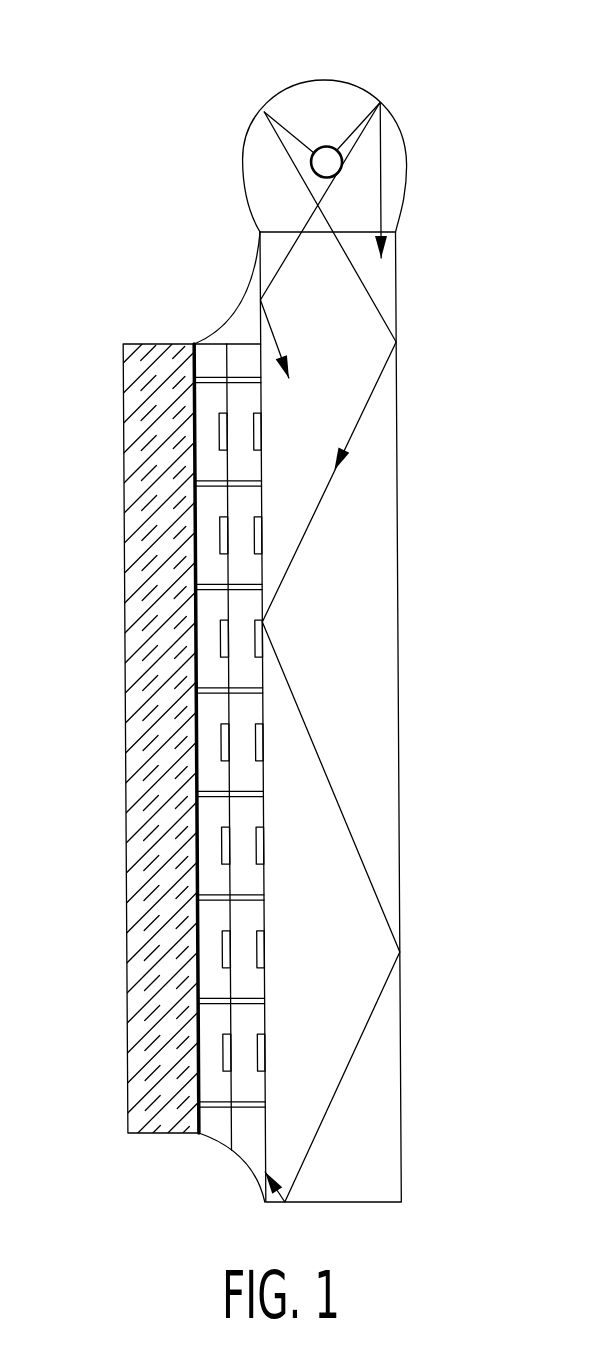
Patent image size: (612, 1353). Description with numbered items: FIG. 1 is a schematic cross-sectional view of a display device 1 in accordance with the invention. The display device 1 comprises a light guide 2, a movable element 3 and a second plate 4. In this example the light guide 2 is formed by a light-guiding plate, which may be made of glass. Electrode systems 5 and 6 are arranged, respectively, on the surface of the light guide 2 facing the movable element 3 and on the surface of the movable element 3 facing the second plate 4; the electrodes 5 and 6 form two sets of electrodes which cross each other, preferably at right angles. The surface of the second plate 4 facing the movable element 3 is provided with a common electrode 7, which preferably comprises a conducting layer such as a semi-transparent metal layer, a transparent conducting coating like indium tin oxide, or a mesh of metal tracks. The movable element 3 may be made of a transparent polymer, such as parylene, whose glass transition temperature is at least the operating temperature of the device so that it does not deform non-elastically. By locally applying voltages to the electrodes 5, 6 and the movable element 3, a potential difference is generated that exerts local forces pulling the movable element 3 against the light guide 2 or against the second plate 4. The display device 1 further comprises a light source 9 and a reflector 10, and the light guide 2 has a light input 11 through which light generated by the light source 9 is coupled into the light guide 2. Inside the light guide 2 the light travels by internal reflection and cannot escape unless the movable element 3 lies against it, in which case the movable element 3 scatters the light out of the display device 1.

The display device 1 is at (405, 982).
The light guide 2 is at (365, 667).
The movable element 3 is at (226, 397).
The second plate 4 is at (162, 1100).
The electrode system 5 is at (260, 429).
The electrode system 6 is at (218, 430).
The common electrode 7 is at (198, 1052).
The light source 9 is at (343, 163).
The reflector 10 is at (327, 79).
The light input 11 is at (353, 232).